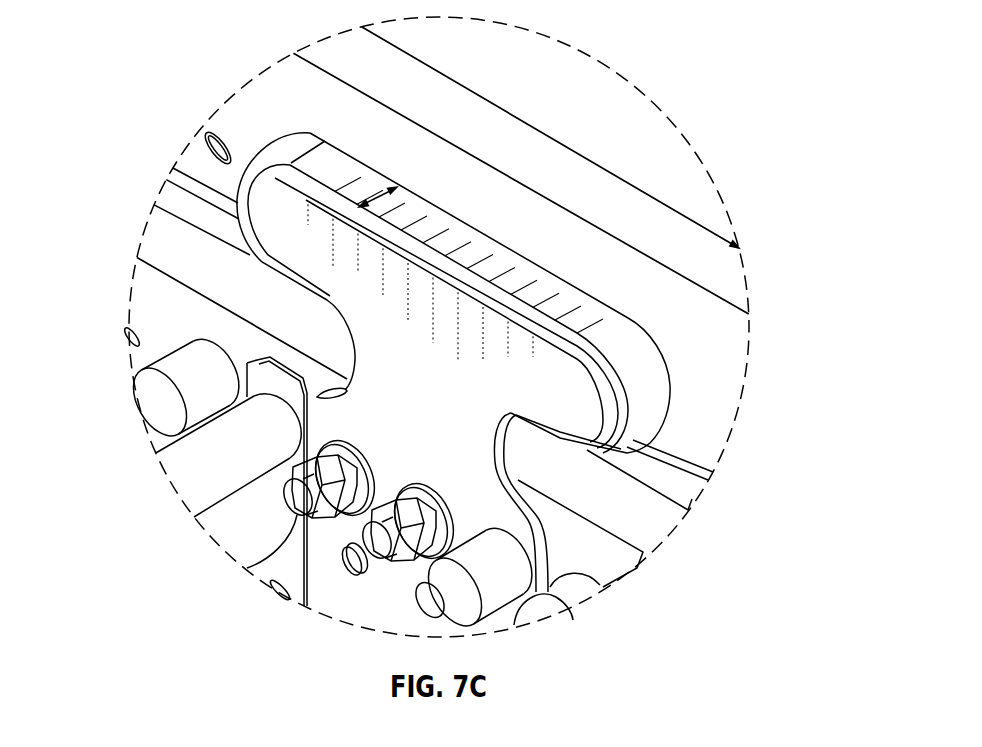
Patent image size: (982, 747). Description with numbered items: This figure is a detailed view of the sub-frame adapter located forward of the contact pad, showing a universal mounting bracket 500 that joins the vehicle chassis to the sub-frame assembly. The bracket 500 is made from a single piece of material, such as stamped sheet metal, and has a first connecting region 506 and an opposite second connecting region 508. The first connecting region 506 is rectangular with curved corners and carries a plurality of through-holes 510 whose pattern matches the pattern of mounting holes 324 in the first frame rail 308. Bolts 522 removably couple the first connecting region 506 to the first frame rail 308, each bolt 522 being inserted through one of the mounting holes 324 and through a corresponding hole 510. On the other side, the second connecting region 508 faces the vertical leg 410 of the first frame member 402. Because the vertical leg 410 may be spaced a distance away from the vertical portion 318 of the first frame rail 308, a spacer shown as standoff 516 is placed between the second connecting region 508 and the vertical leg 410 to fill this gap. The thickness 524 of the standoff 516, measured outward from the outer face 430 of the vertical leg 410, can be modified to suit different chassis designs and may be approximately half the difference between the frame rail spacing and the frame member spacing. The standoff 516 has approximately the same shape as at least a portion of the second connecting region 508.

The first frame rail 308 is at (140, 308).
The vertical portion 318 is at (145, 282).
The mounting holes 324 is at (360, 574).
The first frame member 402 is at (661, 226).
The vertical leg 410 is at (647, 283).
The outer face 430 is at (692, 312).
The universal mounting bracket 500 is at (442, 350).
The first connecting region 506 is at (483, 515).
The second connecting region 508 is at (277, 233).
The holes 510 is at (352, 468).
The standoff 516 is at (643, 360).
The bolts 522 is at (293, 508).
The thickness 524 is at (378, 196).